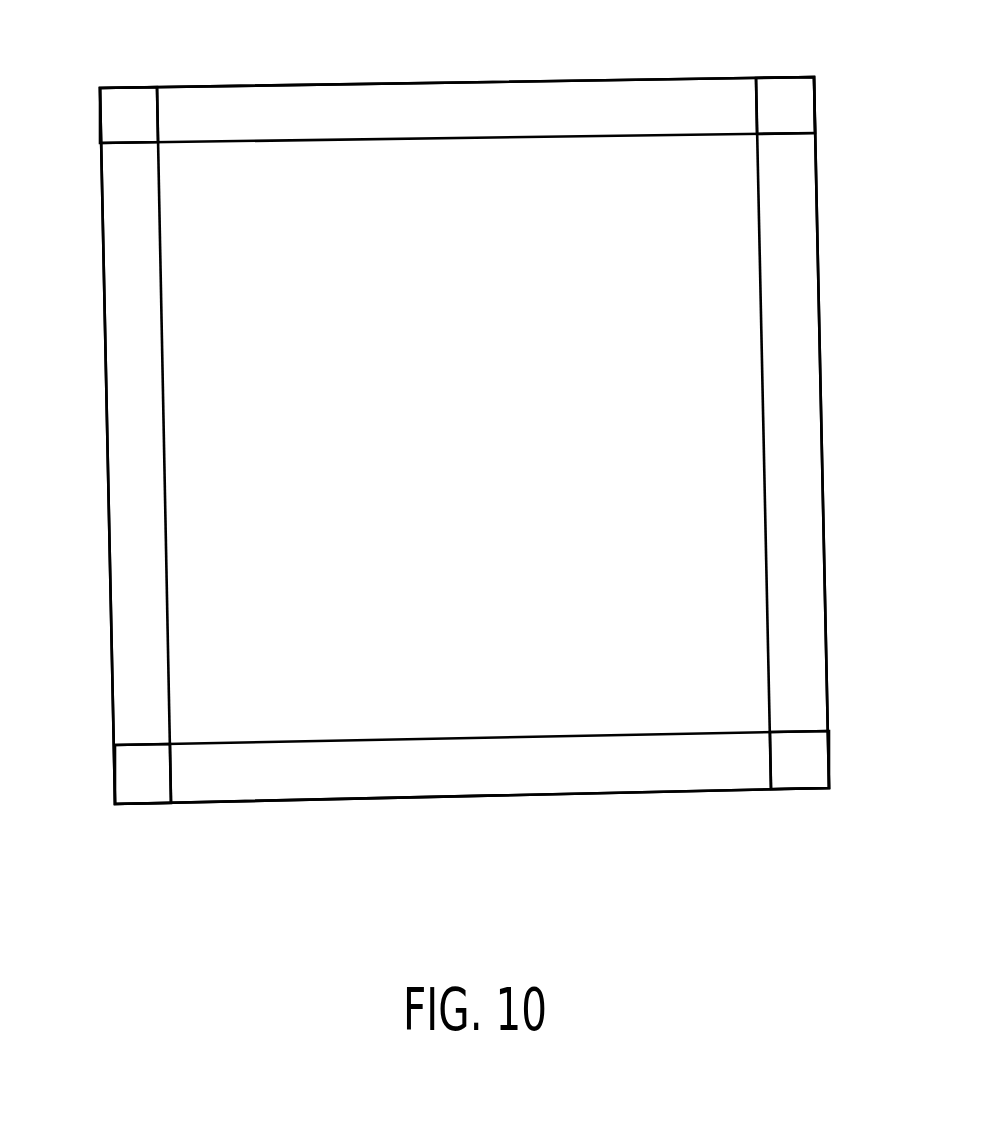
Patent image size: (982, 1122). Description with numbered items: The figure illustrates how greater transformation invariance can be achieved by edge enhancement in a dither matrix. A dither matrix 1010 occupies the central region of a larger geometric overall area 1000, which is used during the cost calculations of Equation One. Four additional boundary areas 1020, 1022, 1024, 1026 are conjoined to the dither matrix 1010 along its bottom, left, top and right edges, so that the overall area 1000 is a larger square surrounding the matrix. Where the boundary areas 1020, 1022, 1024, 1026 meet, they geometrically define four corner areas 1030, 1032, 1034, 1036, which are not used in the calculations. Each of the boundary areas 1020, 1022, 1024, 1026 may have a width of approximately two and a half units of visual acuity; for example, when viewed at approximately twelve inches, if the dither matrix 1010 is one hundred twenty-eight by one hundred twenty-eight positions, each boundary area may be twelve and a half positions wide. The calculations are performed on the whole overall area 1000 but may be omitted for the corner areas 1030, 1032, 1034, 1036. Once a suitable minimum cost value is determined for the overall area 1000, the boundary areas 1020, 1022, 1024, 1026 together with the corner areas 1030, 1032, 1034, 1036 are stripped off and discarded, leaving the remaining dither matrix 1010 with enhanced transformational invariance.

The overall area 1000 is at (188, 923).
The dither matrix 1010 is at (713, 681).
The boundary area 1020 is at (713, 773).
The boundary area 1022 is at (118, 567).
The boundary area 1024 is at (718, 115).
The boundary area 1026 is at (815, 620).
The corner area 1030 is at (805, 775).
The corner area 1032 is at (153, 788).
The corner area 1034 is at (125, 98).
The corner area 1036 is at (777, 86).